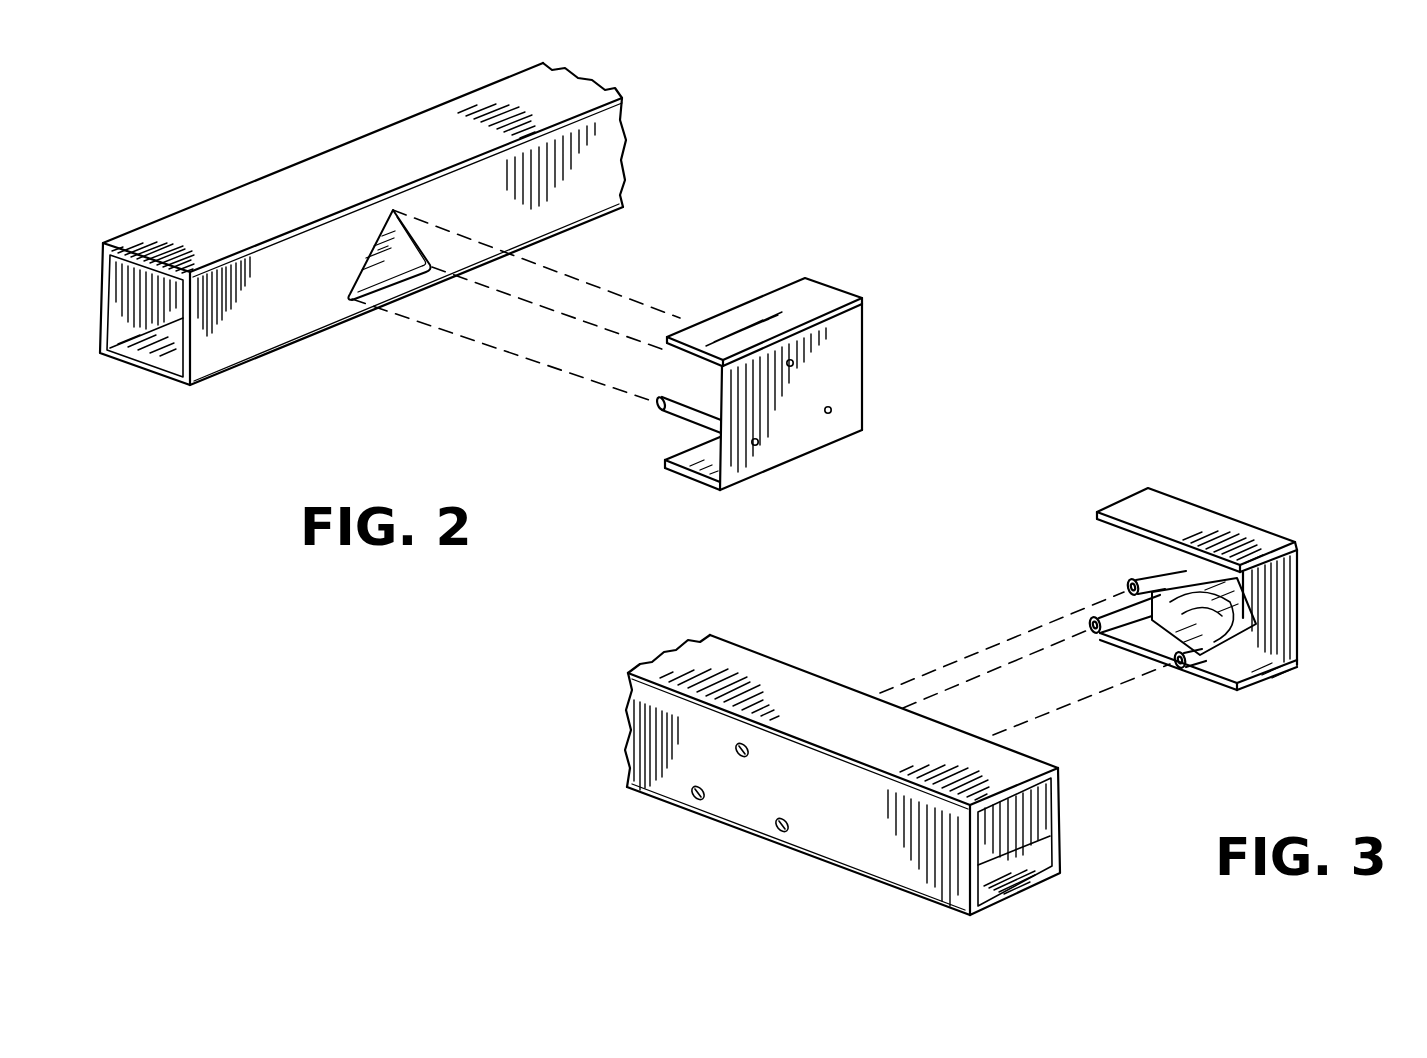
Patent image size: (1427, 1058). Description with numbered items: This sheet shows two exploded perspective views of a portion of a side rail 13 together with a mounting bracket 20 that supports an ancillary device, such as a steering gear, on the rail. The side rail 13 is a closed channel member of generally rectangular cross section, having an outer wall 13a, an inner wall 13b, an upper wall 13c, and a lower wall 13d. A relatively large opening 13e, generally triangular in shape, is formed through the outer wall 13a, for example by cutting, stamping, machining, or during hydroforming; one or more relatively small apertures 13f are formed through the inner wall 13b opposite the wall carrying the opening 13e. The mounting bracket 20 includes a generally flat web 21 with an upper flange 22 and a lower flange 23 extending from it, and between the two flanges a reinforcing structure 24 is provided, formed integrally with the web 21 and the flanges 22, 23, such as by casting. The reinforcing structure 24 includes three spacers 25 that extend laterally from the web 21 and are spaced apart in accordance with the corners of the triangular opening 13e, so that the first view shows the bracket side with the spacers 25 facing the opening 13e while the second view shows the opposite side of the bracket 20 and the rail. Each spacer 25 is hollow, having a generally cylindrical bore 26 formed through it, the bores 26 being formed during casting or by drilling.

In FIG. 2, the side rail 13 is at (607, 160).
In FIG. 3, the side rail 13 is at (750, 667).
In FIG. 2, the outer wall 13a is at (233, 322).
In FIG. 3, the outer wall 13a is at (1033, 815).
In FIG. 2, the inner wall 13b is at (122, 284).
In FIG. 3, the inner wall 13b is at (945, 863).
In FIG. 2, the upper wall 13c is at (426, 136).
In FIG. 3, the upper wall 13c is at (1000, 765).
In FIG. 2, the lower wall 13d is at (163, 353).
In FIG. 3, the lower wall 13d is at (1010, 873).
In FIG. 2, the opening 13e is at (360, 272).
In FIG. 3, the apertures 13f is at (742, 757).
In FIG. 2, the mounting bracket 20 is at (757, 365).
In FIG. 3, the mounting bracket 20 is at (1166, 598).
In FIG. 2, the web 21 is at (848, 355).
In FIG. 3, the web 21 is at (1280, 600).
In FIG. 2, the upper flange 22 is at (764, 307).
In FIG. 3, the upper flange 22 is at (1172, 510).
In FIG. 2, the lower flange 23 is at (695, 460).
In FIG. 3, the lower flange 23 is at (1247, 673).
In FIG. 3, the reinforcing structure 24 is at (1086, 577).
In FIG. 2, the spacers 25 is at (668, 412).
In FIG. 3, the spacers 25 is at (1130, 583).
In FIG. 2, the bore 26 is at (791, 367).